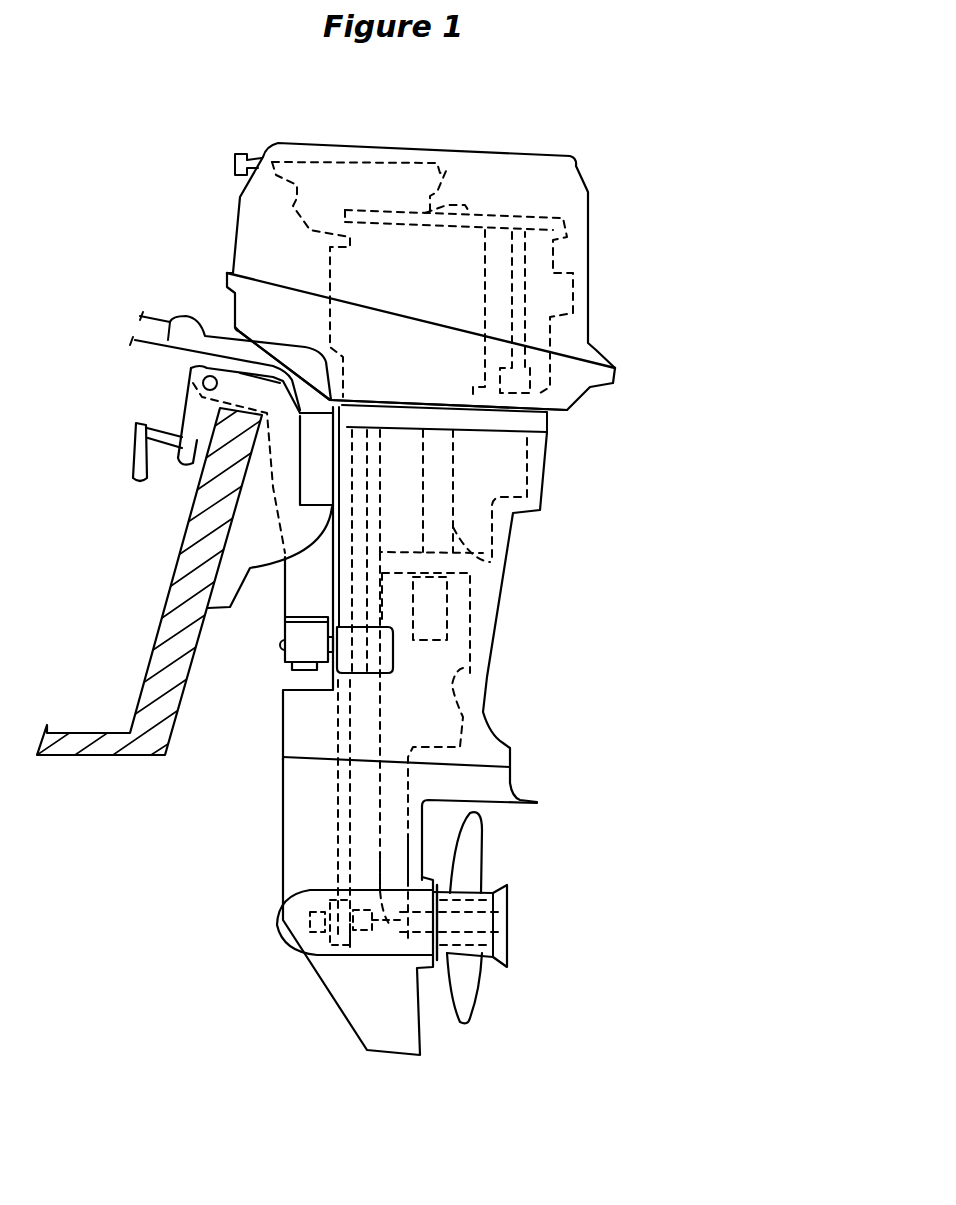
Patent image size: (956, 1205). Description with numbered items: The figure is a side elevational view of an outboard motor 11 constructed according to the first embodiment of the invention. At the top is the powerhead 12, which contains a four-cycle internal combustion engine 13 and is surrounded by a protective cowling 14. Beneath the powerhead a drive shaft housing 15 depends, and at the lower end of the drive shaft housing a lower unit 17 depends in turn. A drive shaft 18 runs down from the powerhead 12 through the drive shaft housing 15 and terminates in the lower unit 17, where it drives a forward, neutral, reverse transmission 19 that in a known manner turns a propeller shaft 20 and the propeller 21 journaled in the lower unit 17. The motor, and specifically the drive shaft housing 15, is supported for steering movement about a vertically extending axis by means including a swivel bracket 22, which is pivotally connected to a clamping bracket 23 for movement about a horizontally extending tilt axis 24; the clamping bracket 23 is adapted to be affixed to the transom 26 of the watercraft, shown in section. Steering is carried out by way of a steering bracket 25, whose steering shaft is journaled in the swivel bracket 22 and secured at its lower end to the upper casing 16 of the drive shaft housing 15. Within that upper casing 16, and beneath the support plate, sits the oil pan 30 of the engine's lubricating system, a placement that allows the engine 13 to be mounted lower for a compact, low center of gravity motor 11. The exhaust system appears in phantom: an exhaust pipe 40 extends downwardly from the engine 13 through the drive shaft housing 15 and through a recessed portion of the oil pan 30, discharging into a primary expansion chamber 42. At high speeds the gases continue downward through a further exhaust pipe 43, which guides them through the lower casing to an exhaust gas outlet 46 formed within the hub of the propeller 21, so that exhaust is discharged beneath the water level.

The outboard motor 11 is at (586, 142).
The powerhead 12 is at (575, 82).
The four-cycle internal combustion engine 13 is at (553, 207).
The protective cowling 14 is at (591, 295).
The drive shaft housing 15 is at (540, 670).
The upper casing 16 is at (543, 483).
The lower unit 17 is at (522, 800).
The drive shaft 18 is at (338, 778).
The forward, neutral, reverse transmission 19 is at (327, 950).
The propeller shaft 20 is at (380, 950).
The propeller 21 is at (473, 988).
The swivel bracket 22 is at (298, 588).
The clamping bracket 23 is at (247, 493).
The tilt axis 24 is at (188, 383).
The steering bracket 25 is at (182, 318).
The transom 26 is at (155, 637).
The oil pan 30 is at (492, 530).
The exhaust pipe 40 is at (460, 545).
The primary expansion chamber 42 is at (468, 705).
The further exhaust pipe 43 is at (380, 862).
The exhaust gas outlet 46 is at (505, 912).